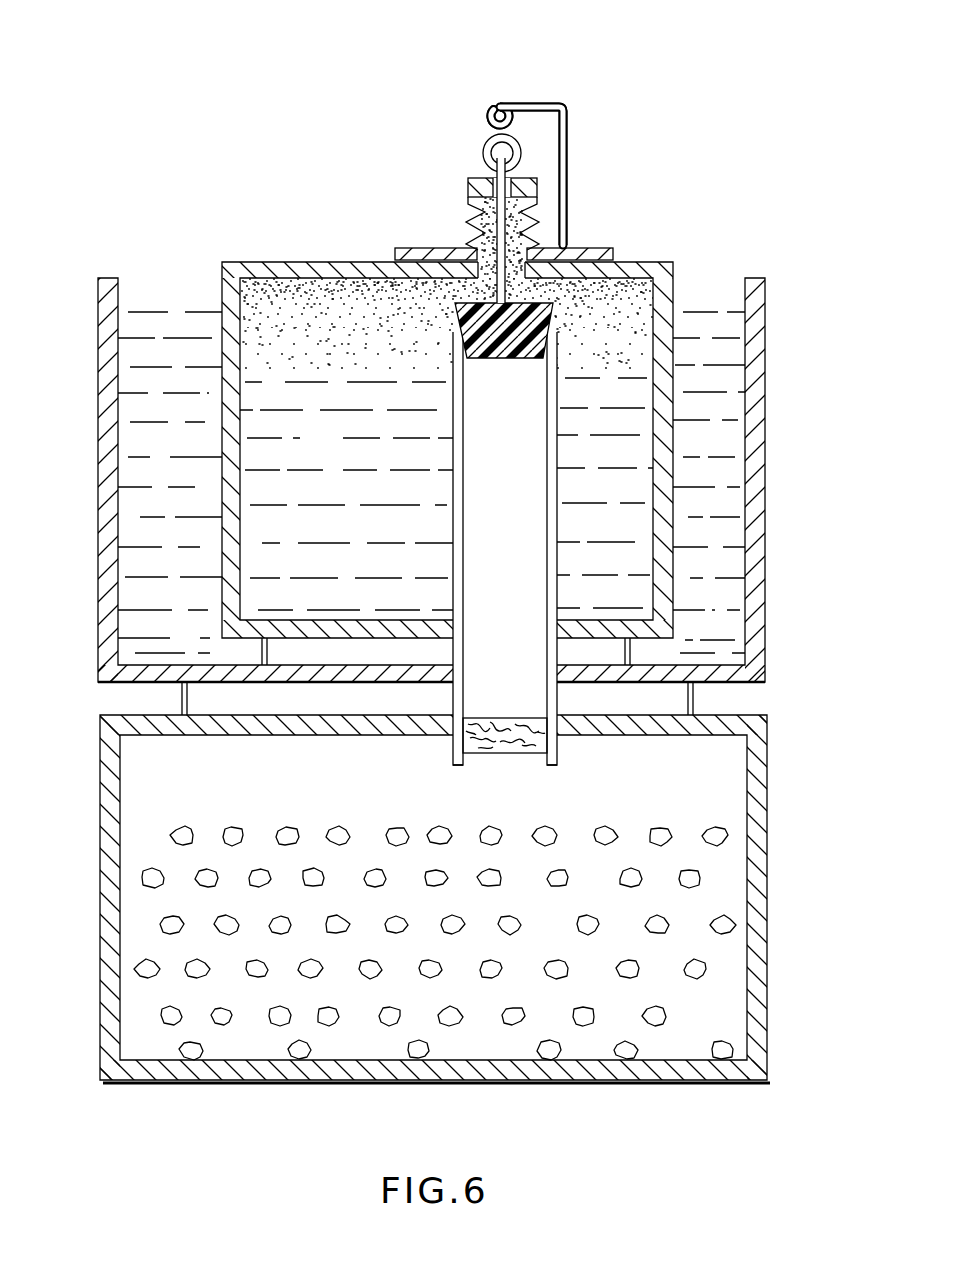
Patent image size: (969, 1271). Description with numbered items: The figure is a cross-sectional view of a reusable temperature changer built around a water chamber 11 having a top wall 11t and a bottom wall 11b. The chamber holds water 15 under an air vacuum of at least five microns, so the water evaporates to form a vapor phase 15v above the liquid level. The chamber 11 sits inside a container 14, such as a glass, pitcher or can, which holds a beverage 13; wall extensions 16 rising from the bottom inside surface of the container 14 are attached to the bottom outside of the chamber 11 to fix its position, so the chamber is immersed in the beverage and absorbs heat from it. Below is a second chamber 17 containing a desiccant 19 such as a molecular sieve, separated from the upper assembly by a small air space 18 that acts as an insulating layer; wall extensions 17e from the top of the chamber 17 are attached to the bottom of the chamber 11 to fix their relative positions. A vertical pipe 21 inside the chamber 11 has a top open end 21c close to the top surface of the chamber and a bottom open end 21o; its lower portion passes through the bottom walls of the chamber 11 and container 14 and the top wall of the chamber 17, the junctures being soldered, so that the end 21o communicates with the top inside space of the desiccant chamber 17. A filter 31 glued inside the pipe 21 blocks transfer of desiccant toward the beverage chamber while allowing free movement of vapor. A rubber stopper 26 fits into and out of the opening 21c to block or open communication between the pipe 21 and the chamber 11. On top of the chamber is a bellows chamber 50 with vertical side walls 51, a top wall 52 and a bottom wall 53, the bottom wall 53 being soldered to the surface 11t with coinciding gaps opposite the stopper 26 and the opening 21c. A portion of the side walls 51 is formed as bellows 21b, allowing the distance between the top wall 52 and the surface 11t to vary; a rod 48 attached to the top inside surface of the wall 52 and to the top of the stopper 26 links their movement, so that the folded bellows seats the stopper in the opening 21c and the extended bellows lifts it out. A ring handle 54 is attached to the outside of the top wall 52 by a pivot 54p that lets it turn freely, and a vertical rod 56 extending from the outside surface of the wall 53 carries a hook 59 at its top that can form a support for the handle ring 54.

The chamber 11 is at (259, 262).
The top wall 11t is at (353, 262).
The bottom wall 11b is at (720, 683).
The beverage 13 is at (160, 312).
The container 14 is at (767, 358).
The water 15 is at (368, 467).
The vapor phase 15v is at (345, 326).
The wall extensions 16 is at (262, 652).
The chamber 17 is at (272, 774).
The wall extensions 17e is at (180, 697).
The air space 18 is at (381, 698).
The desiccant 19 is at (323, 877).
The pipe 21 is at (520, 534).
The bellows 21b is at (467, 227).
The top open end 21c is at (556, 337).
The bottom open end 21o is at (533, 768).
The rubber stopper 26 is at (510, 358).
The filter 31 is at (510, 753).
The rod 48 is at (508, 287).
The bellows chamber 50 is at (470, 200).
The side walls 51 is at (538, 199).
The top wall 52 is at (485, 173).
The bottom wall 53 is at (612, 249).
The ring handle 54 is at (495, 141).
The pivot 54p is at (520, 175).
The vertical rod 56 is at (568, 183).
The hook 59 is at (497, 108).